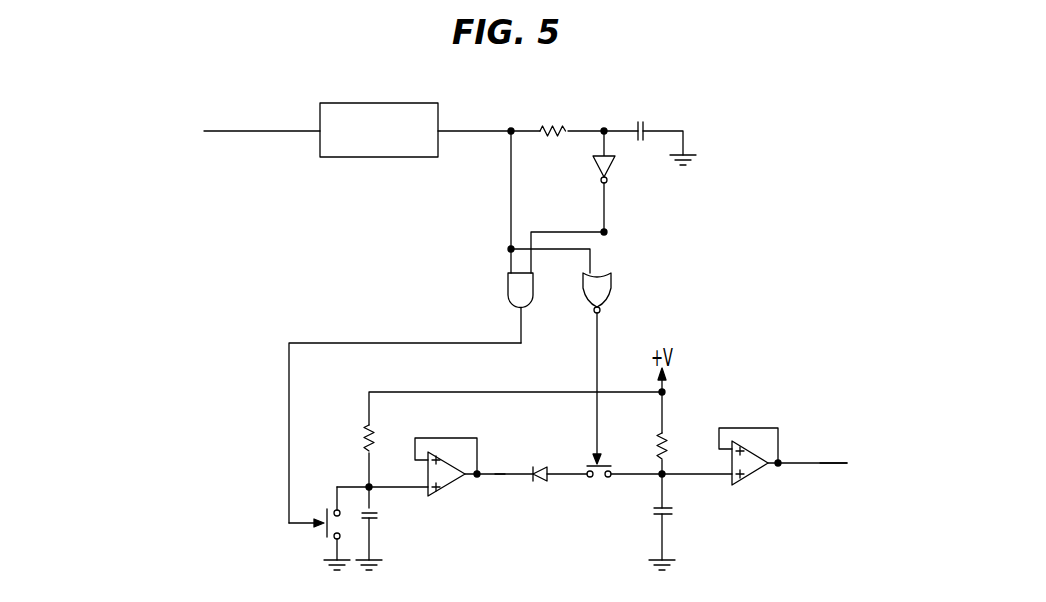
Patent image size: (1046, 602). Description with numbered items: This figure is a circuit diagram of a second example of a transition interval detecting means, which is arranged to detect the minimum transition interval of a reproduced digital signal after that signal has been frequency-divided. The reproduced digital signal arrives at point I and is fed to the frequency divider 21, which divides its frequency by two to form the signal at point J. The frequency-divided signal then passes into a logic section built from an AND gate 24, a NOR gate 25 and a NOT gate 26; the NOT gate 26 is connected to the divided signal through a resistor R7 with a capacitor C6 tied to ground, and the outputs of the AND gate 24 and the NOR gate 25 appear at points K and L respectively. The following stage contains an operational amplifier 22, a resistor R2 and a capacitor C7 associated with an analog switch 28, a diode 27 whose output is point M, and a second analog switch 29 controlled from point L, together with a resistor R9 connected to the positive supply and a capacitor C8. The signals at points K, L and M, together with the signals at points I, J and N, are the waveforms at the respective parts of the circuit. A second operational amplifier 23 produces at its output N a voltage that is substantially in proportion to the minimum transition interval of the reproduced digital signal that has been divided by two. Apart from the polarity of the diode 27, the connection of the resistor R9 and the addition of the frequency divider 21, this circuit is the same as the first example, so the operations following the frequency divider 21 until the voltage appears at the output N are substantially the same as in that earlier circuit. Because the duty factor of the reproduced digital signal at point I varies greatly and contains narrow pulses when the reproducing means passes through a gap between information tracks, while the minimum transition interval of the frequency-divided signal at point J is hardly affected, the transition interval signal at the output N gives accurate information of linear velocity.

The frequency divider 21 is at (432, 155).
The operational amplifier 22 is at (458, 487).
The operational amplifier 23 is at (752, 473).
The AND gate 24 is at (519, 297).
The NOR gate 25 is at (608, 296).
The NOT gate 26 is at (610, 166).
The diode 27 is at (545, 481).
The analog switch 28 is at (324, 532).
The analog switch 29 is at (608, 462).
The resistor R2 is at (363, 436).
The resistor R7 is at (560, 126).
The resistor R9 is at (672, 439).
The capacitor C6 is at (646, 125).
The capacitor C7 is at (374, 520).
The capacitor C8 is at (668, 518).
The point I is at (242, 131).
The point J is at (487, 131).
The point K is at (522, 337).
The point L is at (599, 345).
The point M is at (514, 464).
The output N is at (827, 466).